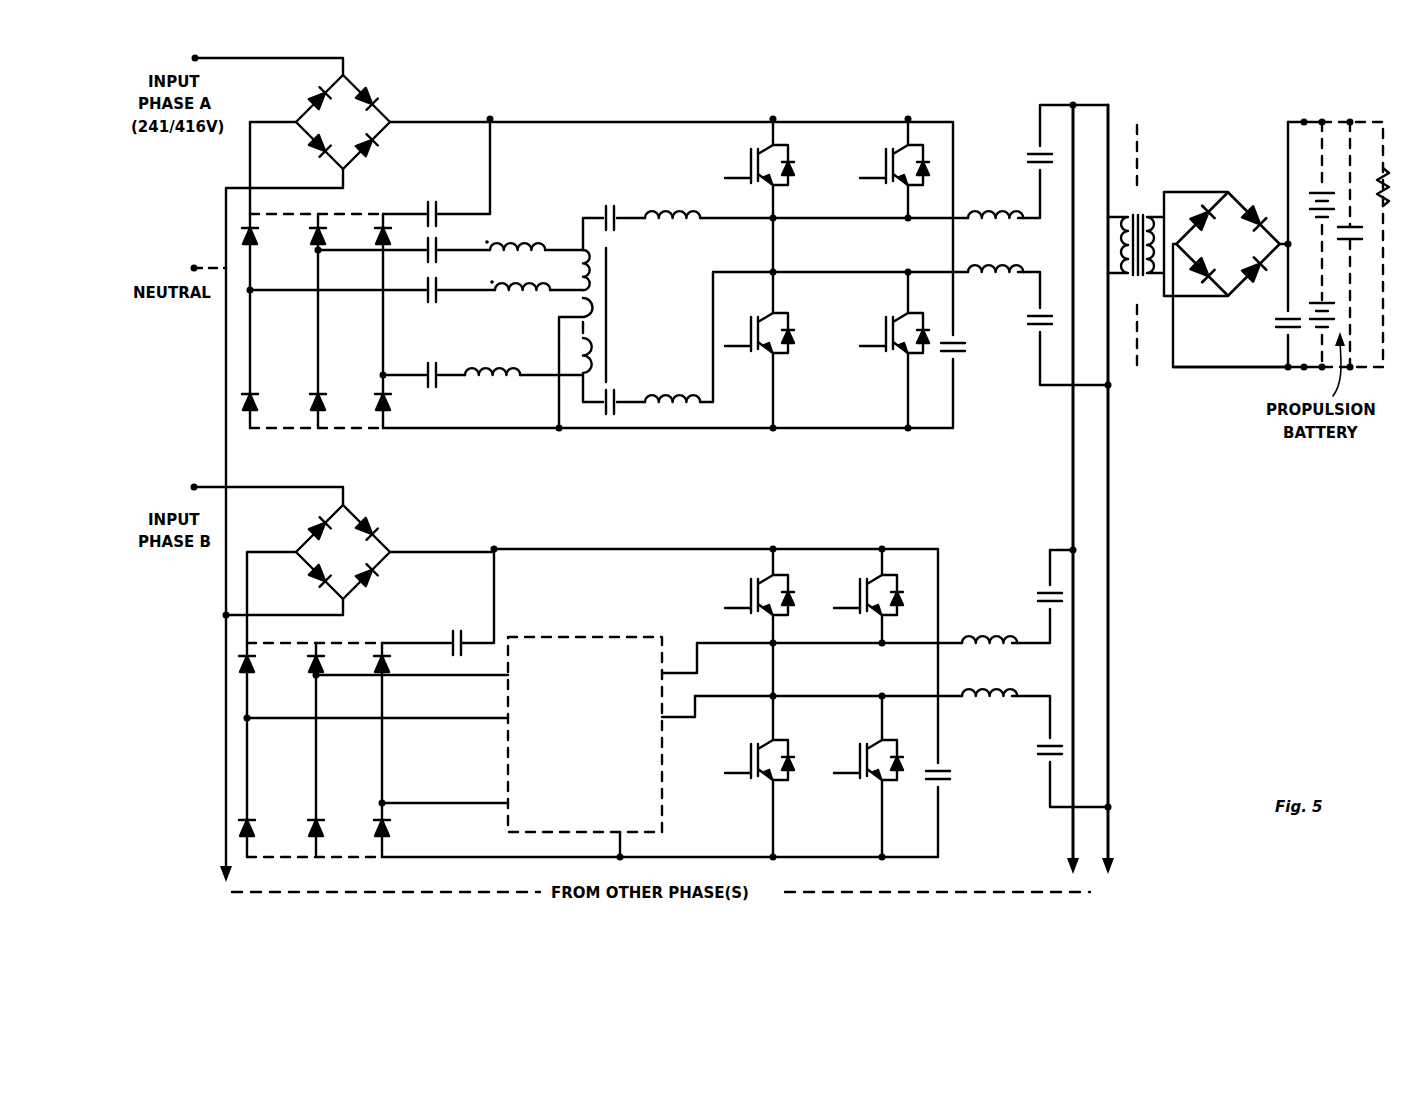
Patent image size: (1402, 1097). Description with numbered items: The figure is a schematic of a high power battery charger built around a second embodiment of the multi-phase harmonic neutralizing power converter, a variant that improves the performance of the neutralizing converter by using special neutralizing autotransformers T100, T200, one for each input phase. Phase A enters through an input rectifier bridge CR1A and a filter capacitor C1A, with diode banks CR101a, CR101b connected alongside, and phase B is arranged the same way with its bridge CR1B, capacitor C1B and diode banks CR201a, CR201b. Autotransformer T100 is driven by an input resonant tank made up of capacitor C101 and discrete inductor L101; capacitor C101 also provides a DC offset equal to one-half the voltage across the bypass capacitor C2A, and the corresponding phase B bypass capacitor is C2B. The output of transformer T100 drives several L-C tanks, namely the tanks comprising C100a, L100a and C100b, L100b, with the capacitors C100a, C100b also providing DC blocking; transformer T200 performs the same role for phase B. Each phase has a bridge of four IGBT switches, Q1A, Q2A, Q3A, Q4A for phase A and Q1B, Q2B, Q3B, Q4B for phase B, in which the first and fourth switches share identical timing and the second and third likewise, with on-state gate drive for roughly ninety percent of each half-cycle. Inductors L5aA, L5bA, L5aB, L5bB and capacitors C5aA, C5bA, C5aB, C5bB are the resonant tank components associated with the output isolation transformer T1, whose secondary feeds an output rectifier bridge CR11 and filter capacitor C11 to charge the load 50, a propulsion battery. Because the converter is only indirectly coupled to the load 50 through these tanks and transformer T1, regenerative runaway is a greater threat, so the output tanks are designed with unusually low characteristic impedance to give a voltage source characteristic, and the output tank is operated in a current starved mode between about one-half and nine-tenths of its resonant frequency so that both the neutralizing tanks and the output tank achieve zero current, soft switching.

The phase A input rectifier bridge CR1A is at (358, 118).
The phase A filter capacitor C1A is at (436, 172).
The phase A upper diode bank CR101a is at (316, 321).
The phase A lower diode bank CR101b is at (316, 376).
The input resonant tank capacitor C101 is at (371, 312).
The discrete inductor L101 is at (524, 307).
The neutralizing autotransformer T100 is at (609, 340).
The L-C tank capacitor C100a is at (614, 217).
The L-C tank inductor L100a is at (799, 201).
The L-C tank capacitor C100b is at (628, 391).
The L-C tank inductor L100b is at (799, 349).
The phase A IGBT switch Q1A is at (746, 168).
The phase A IGBT switch Q2A is at (757, 323).
The phase A IGBT switch Q3A is at (882, 168).
The phase A IGBT switch Q4A is at (881, 350).
The bypass capacitor C2A is at (973, 350).
The resonant tank inductor L5aA is at (996, 194).
The resonant tank capacitor C5aA is at (1042, 138).
The resonant tank inductor L5bA is at (996, 273).
The resonant tank capacitor C5bA is at (1043, 350).
The output isolation transformer T1 is at (1136, 247).
The output rectifier bridge CR11 is at (1229, 227).
The output filter capacitor C11 is at (1268, 244).
The load 50 is at (1270, 137).
The phase B input rectifier bridge CR1B is at (359, 548).
The phase B filter capacitor C1B is at (438, 602).
The phase B upper diode bank CR201a is at (314, 750).
The phase B lower diode bank CR201b is at (314, 803).
The neutralizing autotransformer T200 is at (471, 749).
The phase B IGBT switch Q1B is at (747, 596).
The phase B IGBT switch Q2B is at (747, 750).
The phase B IGBT switch Q3B is at (855, 596).
The phase B IGBT switch Q4B is at (855, 776).
The bypass capacitor C2B is at (961, 780).
The resonant tank inductor L5aB is at (994, 626).
The resonant tank capacitor C5aB is at (1029, 579).
The resonant tank inductor L5bB is at (994, 702).
The resonant tank capacitor C5bB is at (1046, 774).